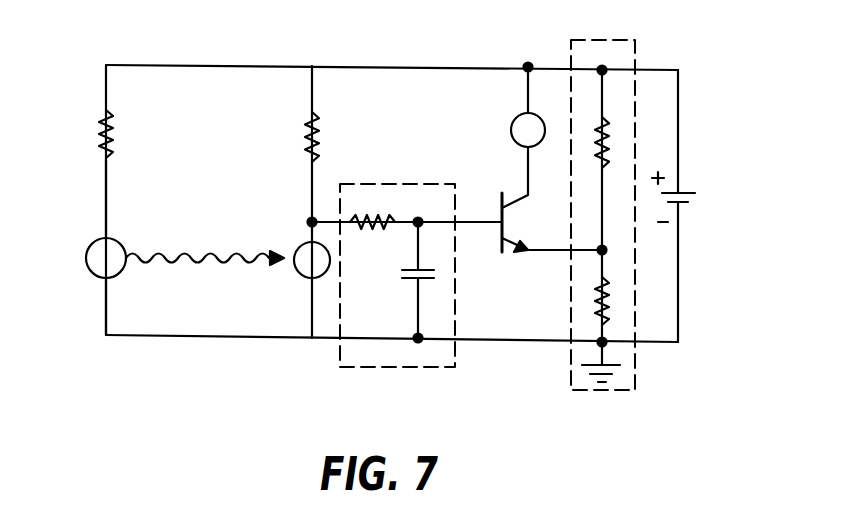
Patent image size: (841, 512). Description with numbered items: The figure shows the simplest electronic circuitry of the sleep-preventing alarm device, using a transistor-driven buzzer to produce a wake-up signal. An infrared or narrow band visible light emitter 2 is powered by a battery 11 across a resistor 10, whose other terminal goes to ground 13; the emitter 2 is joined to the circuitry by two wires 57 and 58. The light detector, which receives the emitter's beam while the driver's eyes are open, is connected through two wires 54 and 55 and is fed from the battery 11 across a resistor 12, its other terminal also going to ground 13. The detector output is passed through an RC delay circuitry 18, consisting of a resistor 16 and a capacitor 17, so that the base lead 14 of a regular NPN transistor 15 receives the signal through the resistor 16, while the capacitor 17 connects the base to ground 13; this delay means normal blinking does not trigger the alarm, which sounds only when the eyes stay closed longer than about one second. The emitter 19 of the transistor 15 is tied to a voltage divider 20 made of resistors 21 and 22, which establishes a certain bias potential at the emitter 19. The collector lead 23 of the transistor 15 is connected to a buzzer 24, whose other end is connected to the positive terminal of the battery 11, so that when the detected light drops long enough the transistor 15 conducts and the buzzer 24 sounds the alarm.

The resistor 10 is at (100, 130).
The wire 54 is at (106, 193).
The light emitter 2 is at (118, 245).
The wire 55 is at (106, 316).
The resistor 12 is at (320, 140).
The wire 57 is at (304, 234).
The wire 58 is at (298, 274).
The resistor 16 is at (378, 222).
The capacitor 17 is at (408, 278).
The RC delay circuitry 18 is at (397, 283).
The base lead 14 is at (478, 226).
The NPN transistor 15 is at (528, 229).
The collector lead 23 is at (520, 200).
The emitter 19 is at (512, 256).
The buzzer 24 is at (516, 120).
The voltage divider 20 is at (623, 197).
The resistor 21 is at (605, 128).
The resistor 22 is at (605, 305).
The battery 11 is at (683, 193).
The ground 13 is at (645, 342).